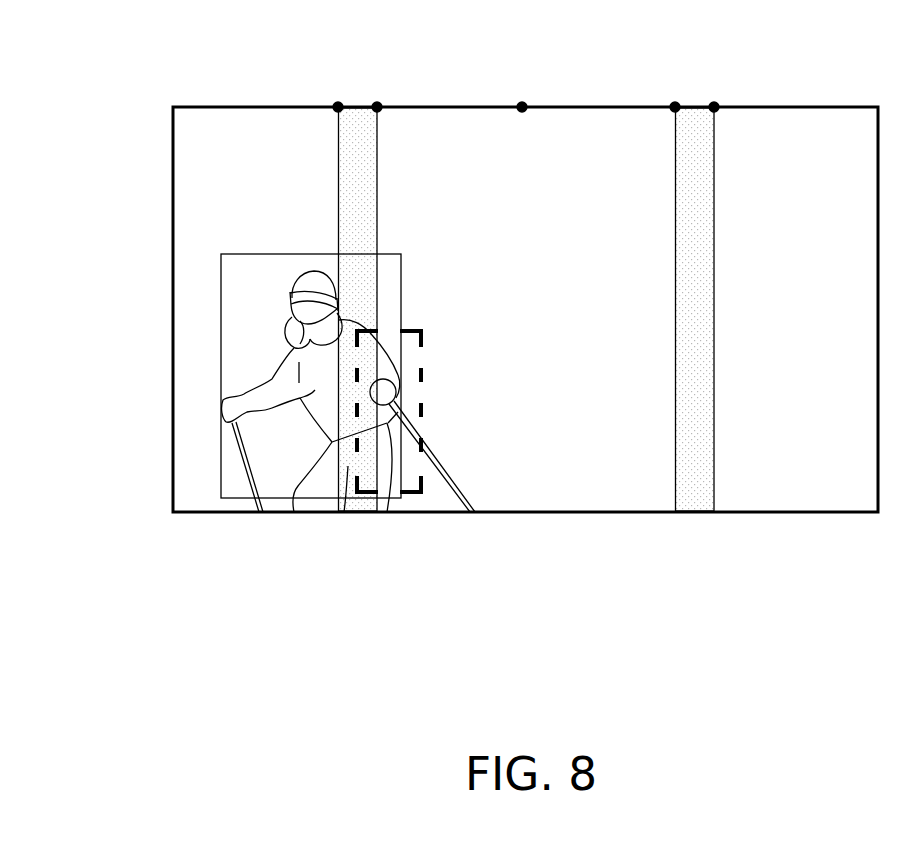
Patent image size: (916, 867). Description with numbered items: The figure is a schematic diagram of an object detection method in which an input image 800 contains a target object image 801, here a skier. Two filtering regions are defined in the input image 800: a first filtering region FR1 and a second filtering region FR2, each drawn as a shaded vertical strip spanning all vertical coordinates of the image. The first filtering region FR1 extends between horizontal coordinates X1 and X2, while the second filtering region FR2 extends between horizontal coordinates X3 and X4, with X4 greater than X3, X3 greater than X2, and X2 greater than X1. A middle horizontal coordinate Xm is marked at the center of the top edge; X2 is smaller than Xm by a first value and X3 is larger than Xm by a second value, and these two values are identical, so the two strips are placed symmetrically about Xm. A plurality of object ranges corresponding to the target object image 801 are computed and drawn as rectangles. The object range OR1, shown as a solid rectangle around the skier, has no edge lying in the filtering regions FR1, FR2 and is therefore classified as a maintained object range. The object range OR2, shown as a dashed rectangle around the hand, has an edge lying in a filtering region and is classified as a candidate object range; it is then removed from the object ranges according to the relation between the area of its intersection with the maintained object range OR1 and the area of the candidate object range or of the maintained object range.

The input image 800 is at (818, 107).
The target object image 801 is at (315, 505).
The first filtering region FR1 is at (357, 125).
The second filtering region FR2 is at (697, 130).
The horizontal coordinate X1 is at (337, 91).
The horizontal coordinate X2 is at (376, 91).
The middle horizontal coordinate Xm is at (530, 91).
The horizontal coordinate X3 is at (669, 91).
The horizontal coordinate X4 is at (723, 91).
The object range OR1 is at (401, 254).
The object range OR2 is at (421, 331).